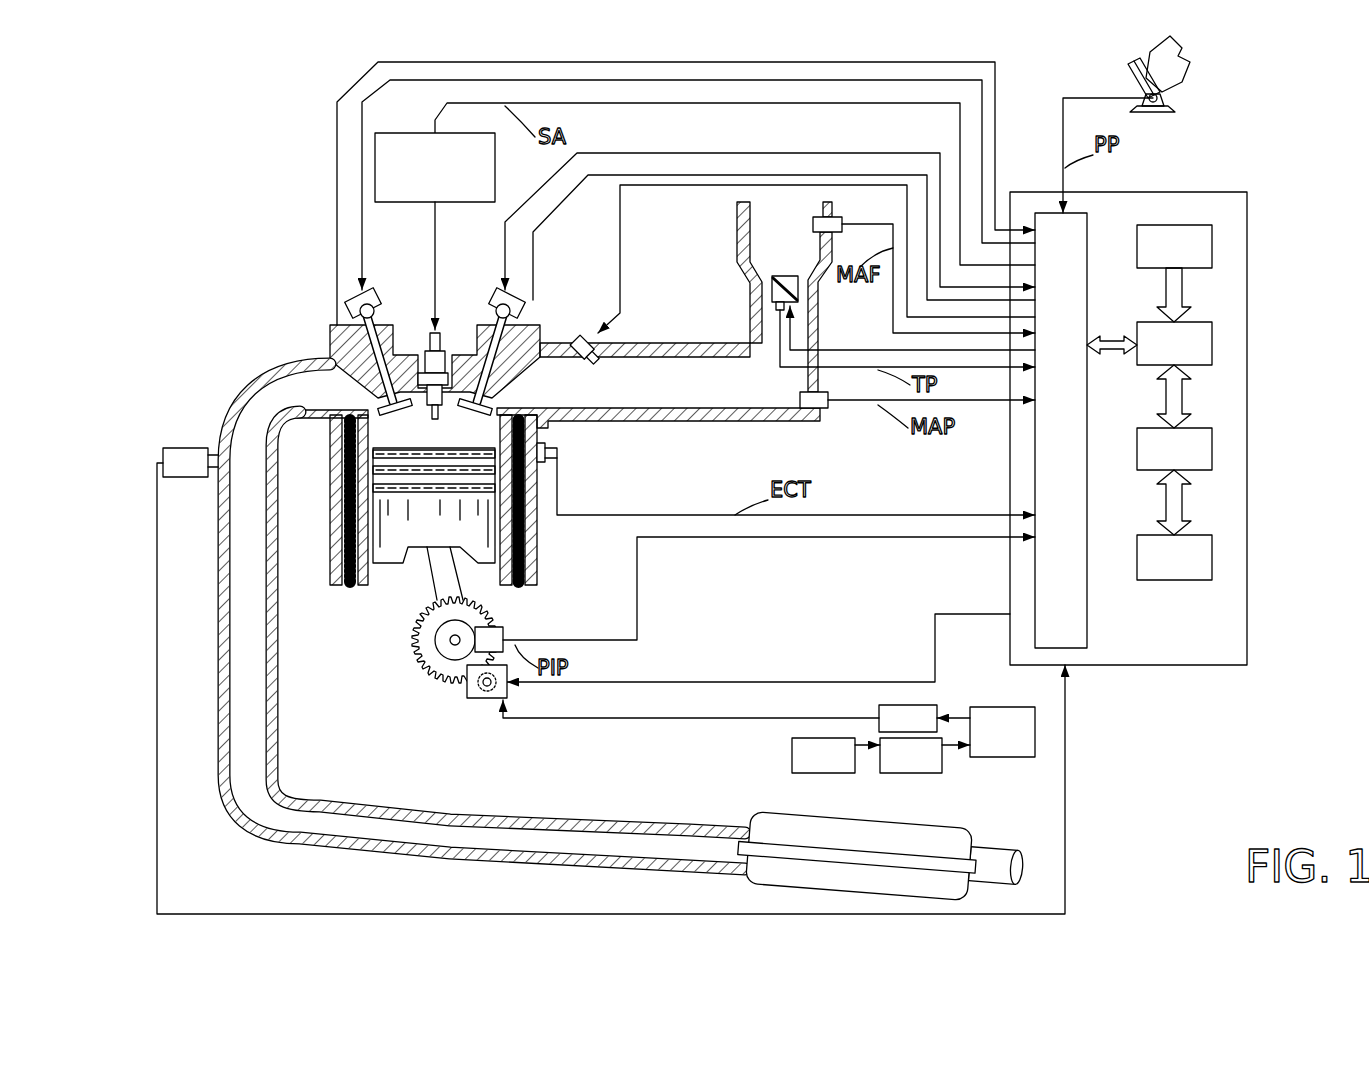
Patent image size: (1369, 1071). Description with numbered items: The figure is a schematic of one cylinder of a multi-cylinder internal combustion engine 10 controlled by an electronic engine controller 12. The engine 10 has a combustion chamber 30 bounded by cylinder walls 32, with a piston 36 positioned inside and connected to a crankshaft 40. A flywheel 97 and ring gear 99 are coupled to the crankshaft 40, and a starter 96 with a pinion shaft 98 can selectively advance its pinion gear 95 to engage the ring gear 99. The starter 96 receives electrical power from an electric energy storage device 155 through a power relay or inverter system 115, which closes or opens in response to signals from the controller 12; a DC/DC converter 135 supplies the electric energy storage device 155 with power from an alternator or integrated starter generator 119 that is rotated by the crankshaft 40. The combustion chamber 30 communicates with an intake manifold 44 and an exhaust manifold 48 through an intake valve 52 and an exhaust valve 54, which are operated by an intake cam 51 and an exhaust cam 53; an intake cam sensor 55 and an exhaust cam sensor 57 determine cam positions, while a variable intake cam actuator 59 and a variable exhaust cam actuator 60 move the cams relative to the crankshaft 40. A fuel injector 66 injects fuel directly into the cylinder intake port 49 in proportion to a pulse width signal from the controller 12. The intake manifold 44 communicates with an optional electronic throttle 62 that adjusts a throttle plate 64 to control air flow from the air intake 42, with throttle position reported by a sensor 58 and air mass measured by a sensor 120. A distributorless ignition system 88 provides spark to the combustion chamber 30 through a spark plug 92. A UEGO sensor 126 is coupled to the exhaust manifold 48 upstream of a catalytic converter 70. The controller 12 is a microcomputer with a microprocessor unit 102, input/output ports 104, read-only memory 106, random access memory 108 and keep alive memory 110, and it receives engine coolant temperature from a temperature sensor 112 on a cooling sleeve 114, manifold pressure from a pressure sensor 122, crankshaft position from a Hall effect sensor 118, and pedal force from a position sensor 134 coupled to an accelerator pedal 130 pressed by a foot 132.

The internal combustion engine 10 is at (262, 280).
The electronic engine controller 12 is at (1240, 195).
The combustion chamber 30 is at (355, 535).
The cylinder walls 32 is at (372, 585).
The piston 36 is at (420, 540).
The crankshaft 40 is at (432, 665).
The air intake 42 is at (795, 251).
The intake manifold 44 is at (731, 394).
The exhaust manifold 48 is at (308, 399).
The cylinder intake port 49 is at (528, 396).
The intake cam 51 is at (494, 292).
The intake valve 52 is at (482, 388).
The exhaust cam 53 is at (374, 292).
The exhaust valve 54 is at (348, 368).
The intake cam sensor 55 is at (512, 316).
The exhaust cam sensor 57 is at (352, 312).
The throttle position sensor 58 is at (774, 308).
The variable intake cam actuator 59 is at (495, 302).
The variable exhaust cam actuator 60 is at (375, 300).
The electronic throttle 62 is at (800, 287).
The throttle plate 64 is at (770, 285).
The fuel injector 66 is at (590, 328).
The catalytic converter 70 is at (790, 813).
The distributorless ignition system 88 is at (390, 133).
The spark plug 92 is at (428, 352).
The pinion gear 95 is at (500, 700).
The starter 96 is at (470, 690).
The flywheel 97 is at (420, 640).
The pinion shaft 98 is at (480, 700).
The ring gear 99 is at (445, 685).
The microprocessor unit 102 is at (1212, 343).
The input/output ports 104 is at (1090, 223).
The read-only memory 106 is at (1212, 245).
The random access memory 108 is at (1212, 448).
The keep alive memory 110 is at (1212, 555).
The temperature sensor 112 is at (552, 460).
The cooling sleeve 114 is at (520, 540).
The power relay or inverter system 115 is at (908, 718).
The Hall effect sensor 118 is at (503, 630).
The alternator or integrated starter generator 119 is at (836, 755).
The air mass sensor 120 is at (830, 217).
The pressure sensor 122 is at (826, 408).
The Universal Exhaust Gas Oxygen (UEGO) sensor 126 is at (163, 452).
The accelerator pedal 130 is at (1130, 72).
The foot 132 is at (1185, 60).
The position sensor 134 is at (1170, 108).
The DC/DC converter 135 is at (925, 755).
The electric energy storage device 155 is at (986, 732).